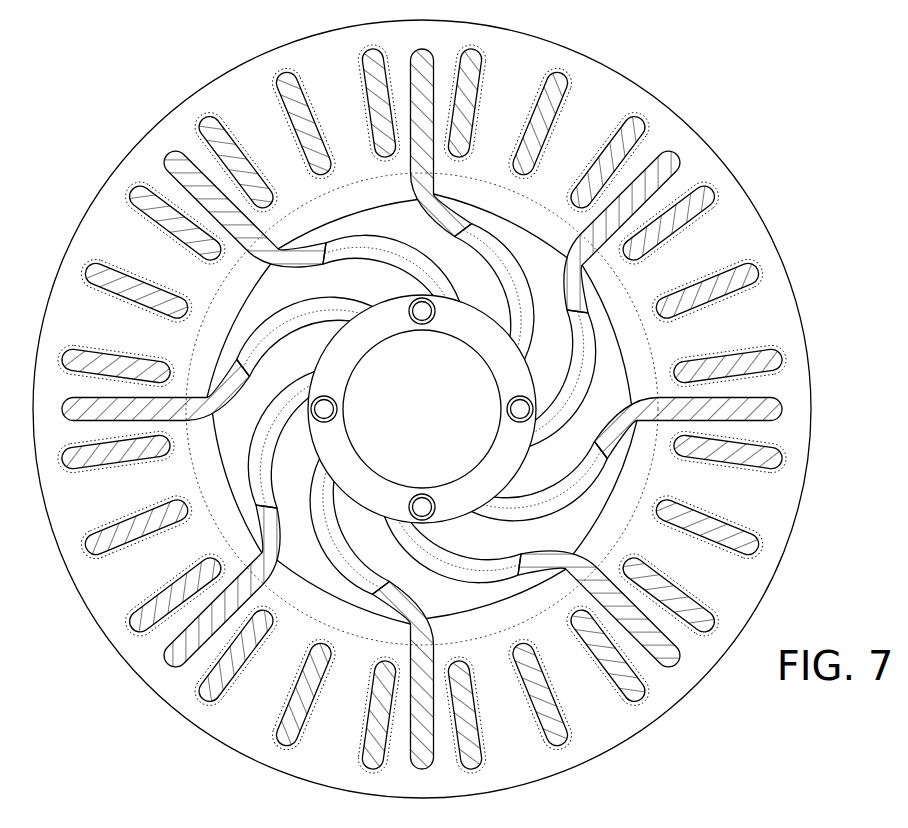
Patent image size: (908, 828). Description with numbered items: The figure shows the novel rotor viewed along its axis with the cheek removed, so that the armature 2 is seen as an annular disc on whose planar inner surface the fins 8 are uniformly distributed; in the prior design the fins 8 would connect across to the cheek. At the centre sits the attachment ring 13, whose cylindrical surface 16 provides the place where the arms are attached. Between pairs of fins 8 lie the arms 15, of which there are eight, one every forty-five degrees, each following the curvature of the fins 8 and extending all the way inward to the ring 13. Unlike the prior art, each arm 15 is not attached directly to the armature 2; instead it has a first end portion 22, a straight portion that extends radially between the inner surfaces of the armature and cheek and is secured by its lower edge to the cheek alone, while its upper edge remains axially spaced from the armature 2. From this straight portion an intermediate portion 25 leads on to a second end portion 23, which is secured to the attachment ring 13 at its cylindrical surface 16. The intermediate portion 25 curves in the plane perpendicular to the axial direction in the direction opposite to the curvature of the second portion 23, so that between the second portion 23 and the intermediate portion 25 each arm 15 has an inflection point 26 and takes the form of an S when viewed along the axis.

The armature 2 is at (712, 138).
The fins 8 is at (239, 128).
The attachment ring 13 is at (378, 464).
The arm 15 is at (471, 384).
The cylindrical surface 16 is at (371, 530).
The first end portion 22 is at (185, 144).
The second end portion 23 is at (378, 290).
The intermediate portion 25 is at (302, 228).
The inflection point 26 is at (338, 237).